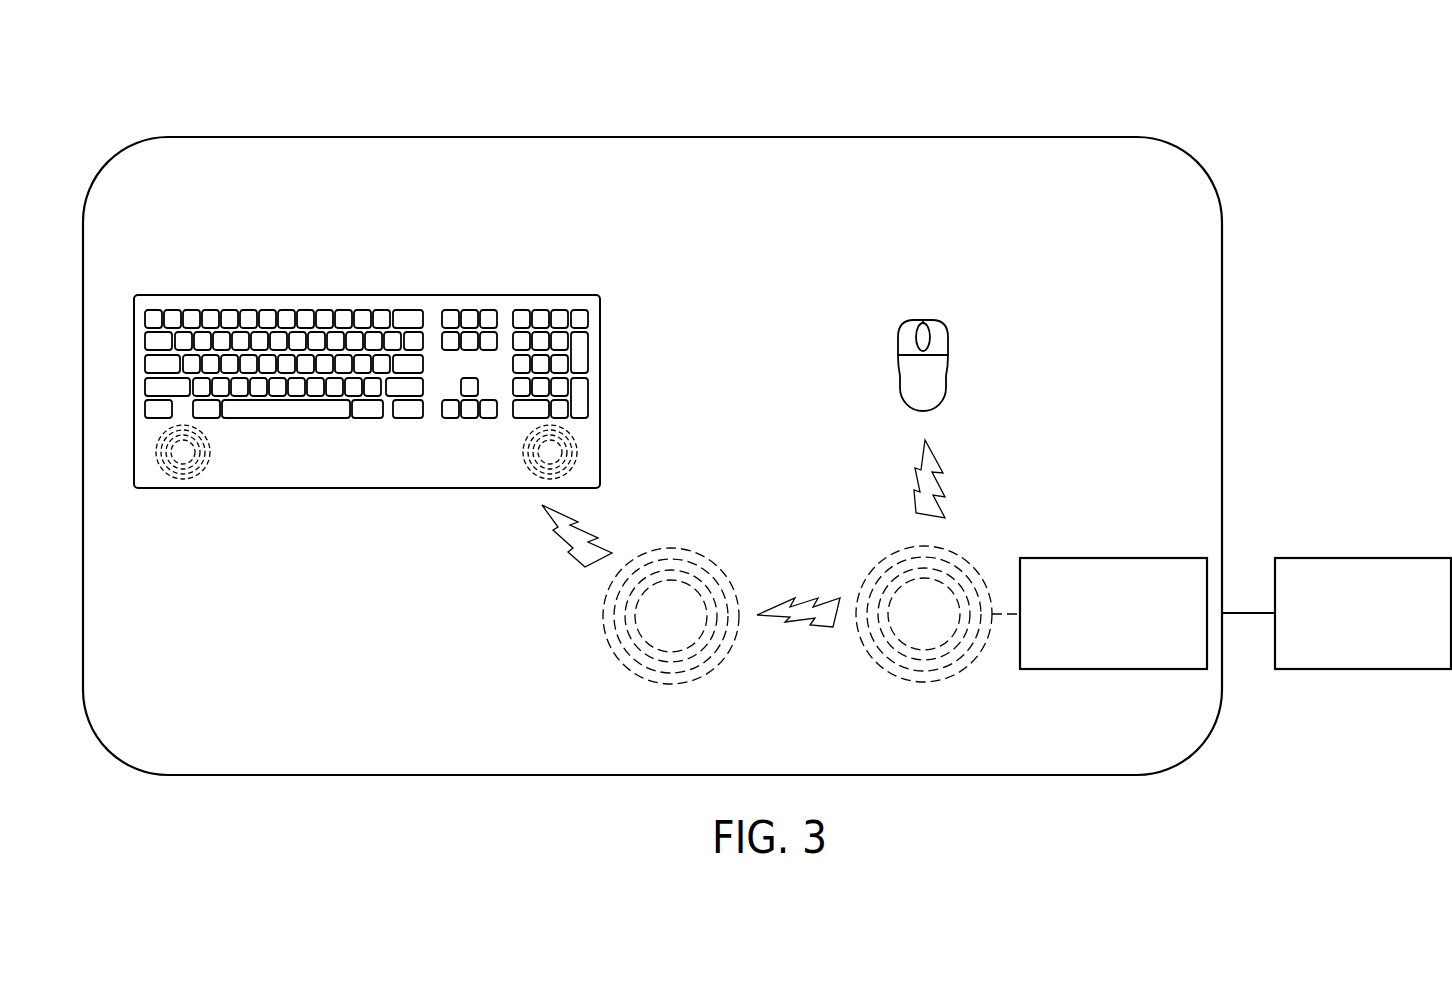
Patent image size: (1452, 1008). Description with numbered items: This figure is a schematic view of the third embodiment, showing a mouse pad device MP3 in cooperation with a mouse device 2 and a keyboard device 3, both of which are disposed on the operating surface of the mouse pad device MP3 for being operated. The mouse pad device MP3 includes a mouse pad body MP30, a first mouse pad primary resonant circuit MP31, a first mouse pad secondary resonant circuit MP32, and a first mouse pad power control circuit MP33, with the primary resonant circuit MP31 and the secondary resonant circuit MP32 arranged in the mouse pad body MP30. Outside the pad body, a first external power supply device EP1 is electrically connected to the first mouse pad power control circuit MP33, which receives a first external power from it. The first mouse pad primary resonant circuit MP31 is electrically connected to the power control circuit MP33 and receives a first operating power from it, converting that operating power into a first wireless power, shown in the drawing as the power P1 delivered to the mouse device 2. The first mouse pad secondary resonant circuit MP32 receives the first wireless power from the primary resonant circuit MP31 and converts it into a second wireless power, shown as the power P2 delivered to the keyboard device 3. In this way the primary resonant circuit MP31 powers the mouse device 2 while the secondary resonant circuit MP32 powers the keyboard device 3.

The mouse pad device MP3 is at (706, 424).
The mouse pad body MP30 is at (1097, 170).
The keyboard device 3 is at (367, 480).
The mouse device 2 is at (935, 320).
The first wireless power transmitted to mouse P1 is at (953, 458).
The second wireless power transmitted to keyboard P2 is at (592, 514).
The first mouse pad primary resonant circuit MP31 is at (875, 660).
The first mouse pad secondary resonant circuit MP32 is at (620, 658).
The first mouse pad power control circuit MP33 is at (1115, 558).
The first external power supply device EP1 is at (1367, 558).